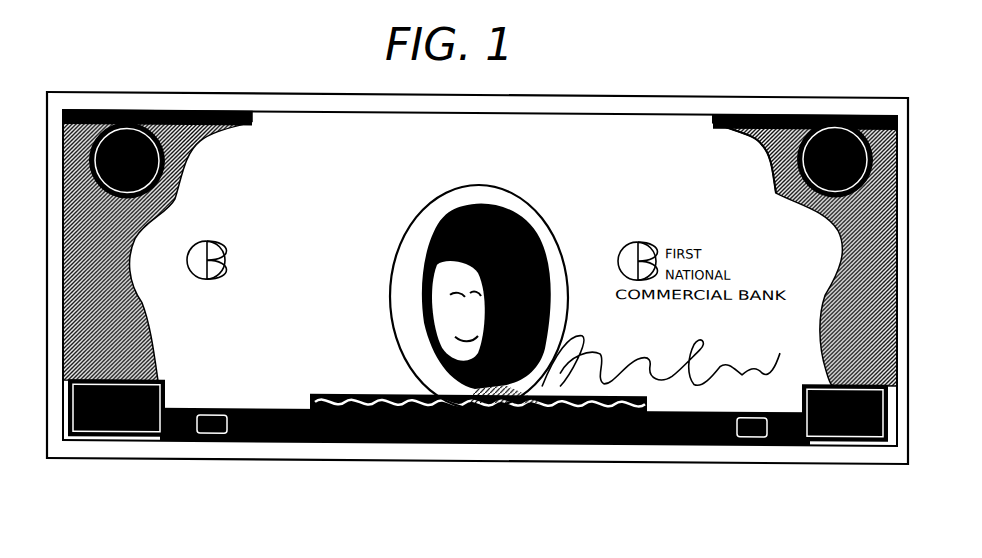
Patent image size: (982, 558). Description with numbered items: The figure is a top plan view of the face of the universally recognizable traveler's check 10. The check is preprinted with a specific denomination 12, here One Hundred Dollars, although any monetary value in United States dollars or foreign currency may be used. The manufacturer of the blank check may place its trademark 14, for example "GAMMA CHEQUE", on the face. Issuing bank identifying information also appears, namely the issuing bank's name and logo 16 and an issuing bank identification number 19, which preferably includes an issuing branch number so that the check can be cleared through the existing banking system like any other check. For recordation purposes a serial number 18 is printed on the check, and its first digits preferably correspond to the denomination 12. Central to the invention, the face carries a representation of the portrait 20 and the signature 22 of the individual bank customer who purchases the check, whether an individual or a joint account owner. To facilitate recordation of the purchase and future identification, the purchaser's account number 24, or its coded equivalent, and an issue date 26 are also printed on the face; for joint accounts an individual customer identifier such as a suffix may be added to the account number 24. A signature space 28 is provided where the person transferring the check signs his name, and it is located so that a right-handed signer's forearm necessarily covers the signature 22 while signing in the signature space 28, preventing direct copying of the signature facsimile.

The traveler's check 10 is at (597, 75).
The denomination 12 is at (828, 133).
The trademark 14 is at (362, 115).
The issuing bank's name and logo 16 is at (225, 239).
The serial number 18 is at (742, 118).
The issuing bank identification number 19 is at (661, 157).
The portrait 20 is at (465, 407).
The signature 22 is at (657, 380).
The account number 24 is at (187, 365).
The issue date 26 is at (718, 400).
The signature space 28 is at (365, 232).